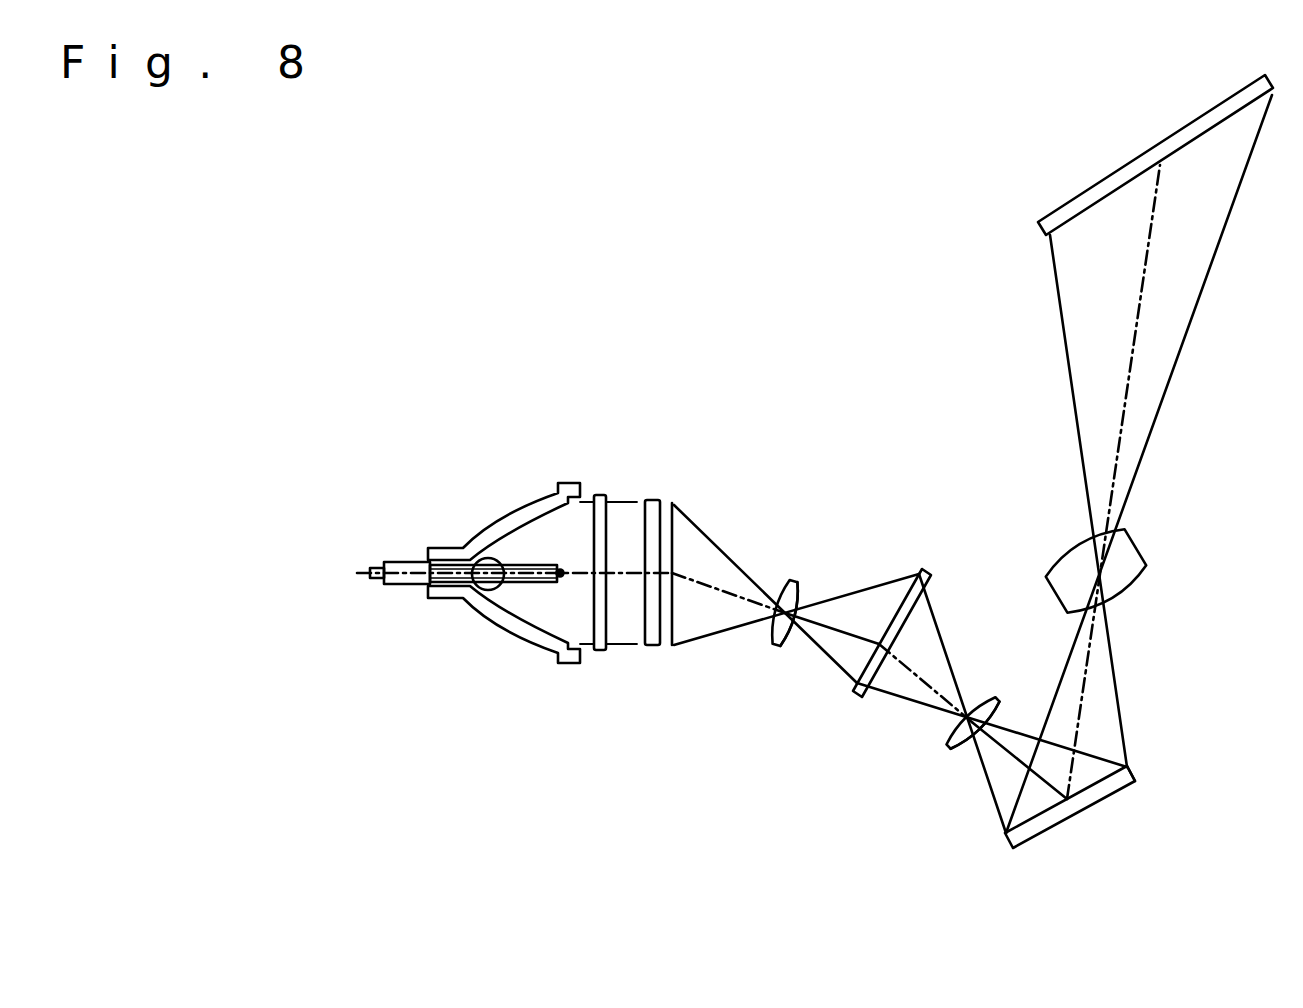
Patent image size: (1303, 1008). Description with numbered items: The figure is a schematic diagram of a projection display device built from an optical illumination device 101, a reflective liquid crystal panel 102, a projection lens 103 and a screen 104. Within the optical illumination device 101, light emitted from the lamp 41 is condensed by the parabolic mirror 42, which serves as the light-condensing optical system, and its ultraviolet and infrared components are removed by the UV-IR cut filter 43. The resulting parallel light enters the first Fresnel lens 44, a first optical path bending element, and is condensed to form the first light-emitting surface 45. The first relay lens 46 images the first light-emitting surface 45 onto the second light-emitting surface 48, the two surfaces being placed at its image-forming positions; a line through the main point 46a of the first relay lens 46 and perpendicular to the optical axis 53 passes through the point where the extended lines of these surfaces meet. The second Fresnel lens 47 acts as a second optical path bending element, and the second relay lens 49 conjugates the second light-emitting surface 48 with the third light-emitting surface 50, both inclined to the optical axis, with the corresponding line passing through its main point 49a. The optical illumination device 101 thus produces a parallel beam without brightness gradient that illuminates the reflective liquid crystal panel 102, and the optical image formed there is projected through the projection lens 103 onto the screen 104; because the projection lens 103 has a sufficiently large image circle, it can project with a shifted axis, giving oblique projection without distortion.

The lamp 41 is at (400, 562).
The parabolic mirror 42 is at (498, 512).
The UV-IR cut filter 43 is at (600, 493).
The first Fresnel lens 44 is at (656, 498).
The first light-emitting surface 45 is at (680, 504).
The optical axis 53 is at (713, 588).
The first relay lens 46 is at (792, 583).
The main point 46a is at (805, 600).
The second Fresnel lens 47 is at (929, 569).
The second light-emitting surface 48 is at (936, 601).
The second relay lens 49 is at (993, 699).
The main point 49a is at (1005, 704).
The third light-emitting surface 50 is at (1046, 834).
The optical illumination device 101 is at (970, 768).
The reflective liquid crystal panel 102 is at (1120, 792).
The projection lens 103 is at (1147, 557).
The screen 104 is at (1180, 128).